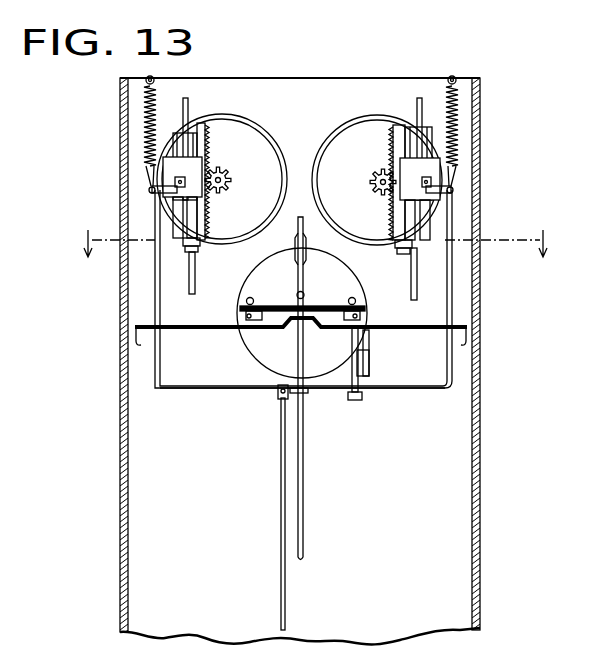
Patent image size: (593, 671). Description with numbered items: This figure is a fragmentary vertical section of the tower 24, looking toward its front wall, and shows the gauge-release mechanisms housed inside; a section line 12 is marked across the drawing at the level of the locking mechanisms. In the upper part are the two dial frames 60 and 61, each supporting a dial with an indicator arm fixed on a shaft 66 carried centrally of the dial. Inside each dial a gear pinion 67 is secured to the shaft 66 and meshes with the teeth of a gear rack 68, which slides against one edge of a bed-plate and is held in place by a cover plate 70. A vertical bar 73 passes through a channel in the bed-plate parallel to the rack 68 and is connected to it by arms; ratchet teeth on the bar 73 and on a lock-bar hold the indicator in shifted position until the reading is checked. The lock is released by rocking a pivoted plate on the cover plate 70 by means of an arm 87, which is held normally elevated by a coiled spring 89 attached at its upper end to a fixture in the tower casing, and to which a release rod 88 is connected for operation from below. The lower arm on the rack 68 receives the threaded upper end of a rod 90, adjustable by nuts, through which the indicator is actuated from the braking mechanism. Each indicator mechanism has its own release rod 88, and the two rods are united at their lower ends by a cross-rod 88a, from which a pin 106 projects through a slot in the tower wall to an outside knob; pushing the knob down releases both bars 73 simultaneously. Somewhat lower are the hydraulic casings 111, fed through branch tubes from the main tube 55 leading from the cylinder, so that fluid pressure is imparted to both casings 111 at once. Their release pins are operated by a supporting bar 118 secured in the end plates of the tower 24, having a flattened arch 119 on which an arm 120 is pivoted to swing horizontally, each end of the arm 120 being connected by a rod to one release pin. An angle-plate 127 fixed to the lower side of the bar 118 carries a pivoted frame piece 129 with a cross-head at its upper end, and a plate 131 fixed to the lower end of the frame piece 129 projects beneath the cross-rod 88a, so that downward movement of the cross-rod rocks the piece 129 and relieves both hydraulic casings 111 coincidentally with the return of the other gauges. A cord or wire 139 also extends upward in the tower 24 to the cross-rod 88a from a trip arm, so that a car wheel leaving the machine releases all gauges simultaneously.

The section line 12 is at (315, 243).
The tower 24 is at (480, 408).
The main tube 55 is at (305, 483).
The dial frame 60 is at (377, 115).
The dial frame 61 is at (256, 121).
The shaft 66 is at (224, 186).
The gear pinion 67 is at (228, 180).
The gear rack 68 is at (210, 132).
The cover plate 70 is at (172, 166).
The vertical bar 73 is at (189, 108).
The arm 87 is at (165, 198).
The release rod 88 is at (155, 272).
The cross-rod 88a is at (275, 389).
The coiled spring 89 is at (145, 115).
The rod 90 is at (190, 268).
The pin 106 is at (304, 393).
The casing 111 is at (252, 340).
The supporting bar 118 is at (172, 330).
The flattened arch 119 is at (287, 306).
The arm 120 is at (333, 306).
The angle-plate 127 is at (370, 348).
The frame piece 129 is at (368, 370).
The plate 131 is at (360, 395).
The cord or wire 139 is at (281, 521).